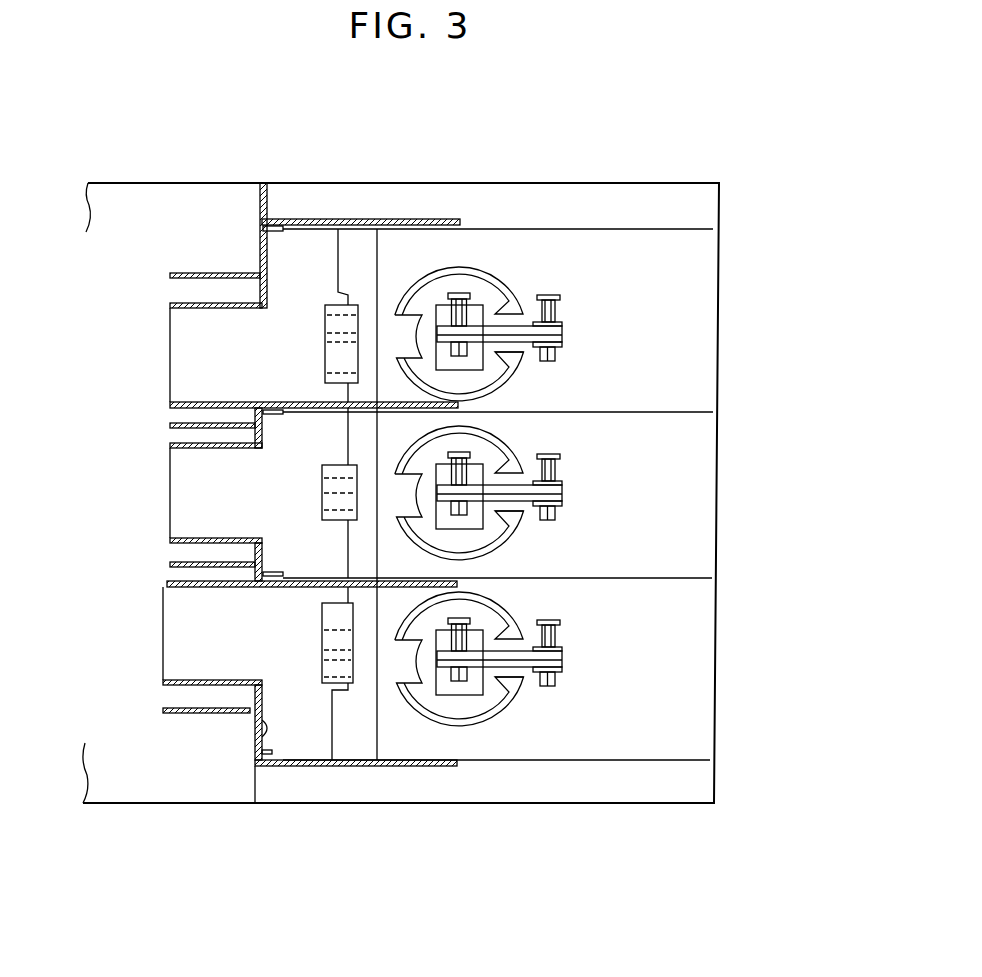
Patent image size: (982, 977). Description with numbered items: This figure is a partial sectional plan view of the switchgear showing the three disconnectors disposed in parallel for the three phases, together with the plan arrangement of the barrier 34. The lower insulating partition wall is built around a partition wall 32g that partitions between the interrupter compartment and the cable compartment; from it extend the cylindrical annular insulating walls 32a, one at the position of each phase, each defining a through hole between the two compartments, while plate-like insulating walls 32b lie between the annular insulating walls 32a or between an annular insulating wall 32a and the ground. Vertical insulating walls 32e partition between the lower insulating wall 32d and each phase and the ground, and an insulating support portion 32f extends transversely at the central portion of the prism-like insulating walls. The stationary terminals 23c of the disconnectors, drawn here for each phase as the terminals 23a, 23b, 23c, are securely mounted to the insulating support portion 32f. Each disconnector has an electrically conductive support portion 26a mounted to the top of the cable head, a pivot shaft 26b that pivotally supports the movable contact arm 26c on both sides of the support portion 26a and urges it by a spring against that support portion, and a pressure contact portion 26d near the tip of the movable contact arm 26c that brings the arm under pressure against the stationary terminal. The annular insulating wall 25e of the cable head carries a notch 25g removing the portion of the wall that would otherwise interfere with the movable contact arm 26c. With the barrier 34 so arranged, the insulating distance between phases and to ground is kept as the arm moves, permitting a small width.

The barrier 34 is at (677, 229).
The vertical insulating walls 32e is at (368, 219).
The annular insulating walls 32a is at (170, 343).
The plate-like insulating walls 32b is at (170, 274).
The partition wall 32g is at (253, 743).
The lower insulating wall 32d is at (380, 262).
The insulating support portion 32f is at (338, 256).
The terminal block 23a is at (322, 630).
The terminal block 23b is at (322, 507).
The stationary terminals 23c is at (325, 330).
The annular insulating wall 25e is at (505, 385).
The notch 25g is at (525, 352).
The electrically conductive support portion 26a is at (480, 303).
The pivot shaft 26b is at (460, 292).
The movable contact arm 26c is at (560, 330).
The pressure contact portion 26d is at (558, 313).